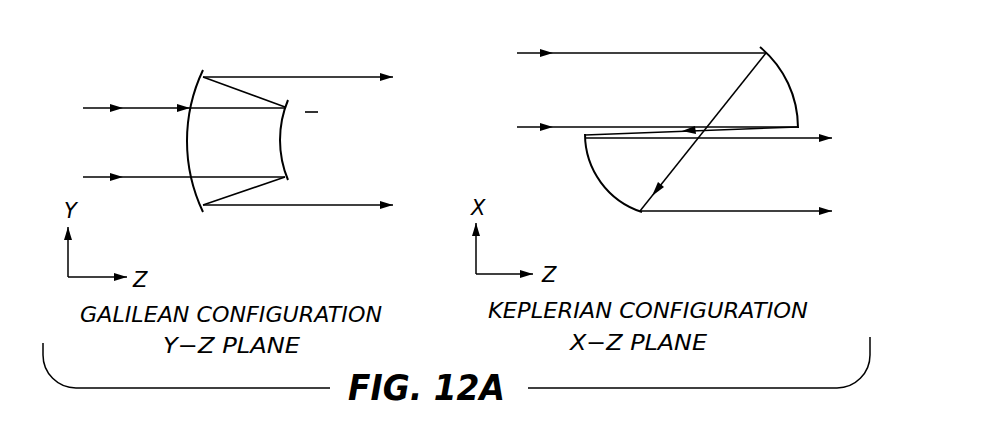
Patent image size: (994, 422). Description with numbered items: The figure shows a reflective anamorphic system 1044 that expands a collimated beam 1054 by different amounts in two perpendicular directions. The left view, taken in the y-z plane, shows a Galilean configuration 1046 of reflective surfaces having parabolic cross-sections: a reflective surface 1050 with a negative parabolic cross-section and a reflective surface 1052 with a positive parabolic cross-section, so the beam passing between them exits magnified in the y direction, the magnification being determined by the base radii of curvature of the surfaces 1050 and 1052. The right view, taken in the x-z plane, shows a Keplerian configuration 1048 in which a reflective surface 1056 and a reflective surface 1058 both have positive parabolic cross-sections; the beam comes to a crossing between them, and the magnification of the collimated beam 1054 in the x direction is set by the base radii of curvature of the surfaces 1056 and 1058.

The reflective anamorphic system 1044 is at (458, 44).
The Galilean configuration 1046 is at (270, 152).
The Keplerian configuration 1048 is at (712, 98).
The reflective surface 1050 is at (283, 149).
The reflective surface 1052 is at (188, 151).
The collimated beam 1054 is at (88, 165).
The reflective surface 1056 is at (781, 70).
The reflective surface 1058 is at (594, 172).